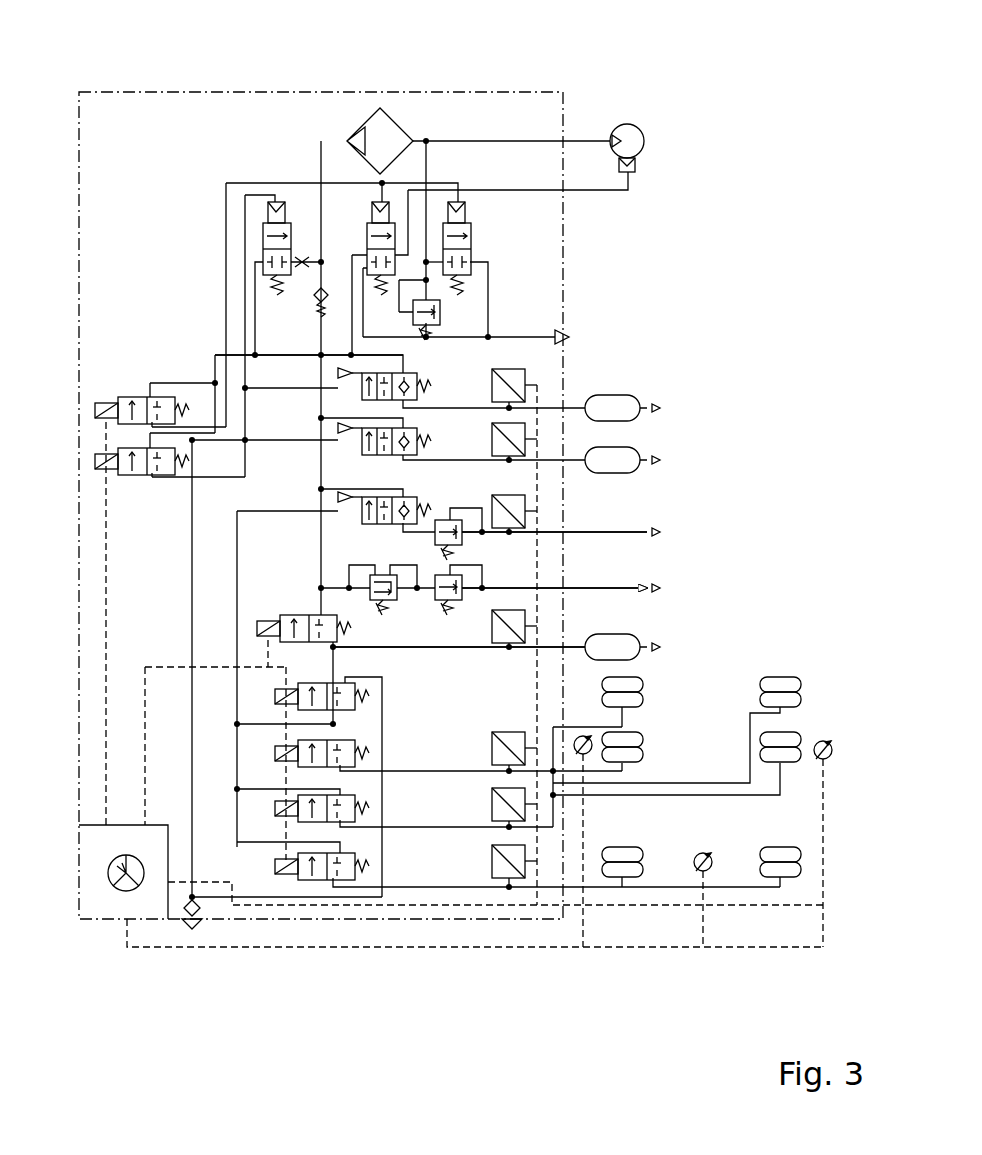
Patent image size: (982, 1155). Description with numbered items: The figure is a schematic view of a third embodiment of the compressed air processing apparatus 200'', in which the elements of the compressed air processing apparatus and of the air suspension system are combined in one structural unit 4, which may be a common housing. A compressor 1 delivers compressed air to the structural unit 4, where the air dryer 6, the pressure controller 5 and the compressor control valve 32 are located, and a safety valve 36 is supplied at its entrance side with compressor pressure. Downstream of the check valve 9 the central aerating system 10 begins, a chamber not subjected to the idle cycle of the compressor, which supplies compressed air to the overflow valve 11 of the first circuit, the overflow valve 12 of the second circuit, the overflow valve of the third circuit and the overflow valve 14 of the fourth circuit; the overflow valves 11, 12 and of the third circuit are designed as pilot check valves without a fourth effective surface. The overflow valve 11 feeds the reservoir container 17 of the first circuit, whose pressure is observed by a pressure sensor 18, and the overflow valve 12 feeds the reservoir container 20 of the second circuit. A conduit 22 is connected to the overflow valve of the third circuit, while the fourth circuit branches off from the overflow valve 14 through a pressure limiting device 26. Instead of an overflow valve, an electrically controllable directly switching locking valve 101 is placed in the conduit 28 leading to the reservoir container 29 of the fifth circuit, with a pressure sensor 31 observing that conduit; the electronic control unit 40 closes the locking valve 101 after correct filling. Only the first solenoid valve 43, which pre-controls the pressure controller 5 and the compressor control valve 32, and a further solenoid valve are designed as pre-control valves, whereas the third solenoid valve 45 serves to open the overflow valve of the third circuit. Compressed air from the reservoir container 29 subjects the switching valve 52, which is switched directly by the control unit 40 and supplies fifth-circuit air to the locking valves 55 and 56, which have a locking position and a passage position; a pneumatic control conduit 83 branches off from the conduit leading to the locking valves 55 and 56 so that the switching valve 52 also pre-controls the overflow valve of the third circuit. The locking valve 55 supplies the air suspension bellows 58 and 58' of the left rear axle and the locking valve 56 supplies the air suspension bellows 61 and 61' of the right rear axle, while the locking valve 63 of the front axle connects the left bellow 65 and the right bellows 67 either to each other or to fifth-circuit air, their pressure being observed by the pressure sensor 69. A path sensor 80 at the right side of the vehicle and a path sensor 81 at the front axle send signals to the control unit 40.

The compressed air processing apparatus 200'' is at (439, 524).
The structural unit 4 is at (453, 90).
The air dryer 6 is at (397, 118).
The compressor 1 is at (630, 132).
The compressor control valve 32 is at (316, 165).
The pressure controller 5 is at (487, 243).
The safety valve 36 is at (460, 313).
The check valve 9 is at (315, 296).
The central aerating system 10 is at (317, 354).
The overflow valve 11 is at (453, 378).
The overflow valve 12 is at (470, 435).
The pressure sensor 18 is at (545, 378).
The reservoir container 17 is at (625, 405).
The reservoir container 20 is at (620, 458).
The conduit 22 is at (610, 532).
The overflow valve 14 is at (367, 575).
The pressure limiting device 26 is at (474, 604).
The pressure sensor 31 is at (517, 617).
The reservoir container 29 is at (625, 645).
The first solenoid valve 43 is at (90, 407).
The third solenoid valve 45 is at (90, 460).
The locking valve 101 is at (175, 588).
The pneumatic control conduit 83 is at (192, 607).
The switching valve 52 is at (360, 861).
The locking valve 55 is at (304, 890).
The locking valve 56 is at (314, 917).
The locking valve 63 is at (309, 884).
The conduit 28 is at (442, 650).
The pressure sensor 69 is at (517, 942).
The electronic control unit 40 is at (107, 843).
The air spring bellows rear axle 58' is at (649, 688).
The air spring bellows rear axle 61' is at (754, 688).
The air suspension bellows 58 is at (650, 751).
The air suspension bellow 61 is at (819, 733).
The path sensor 80 is at (829, 756).
The air suspension bellow 65 is at (622, 853).
The path sensor 81 is at (699, 853).
The air suspension bellows 67 is at (780, 853).